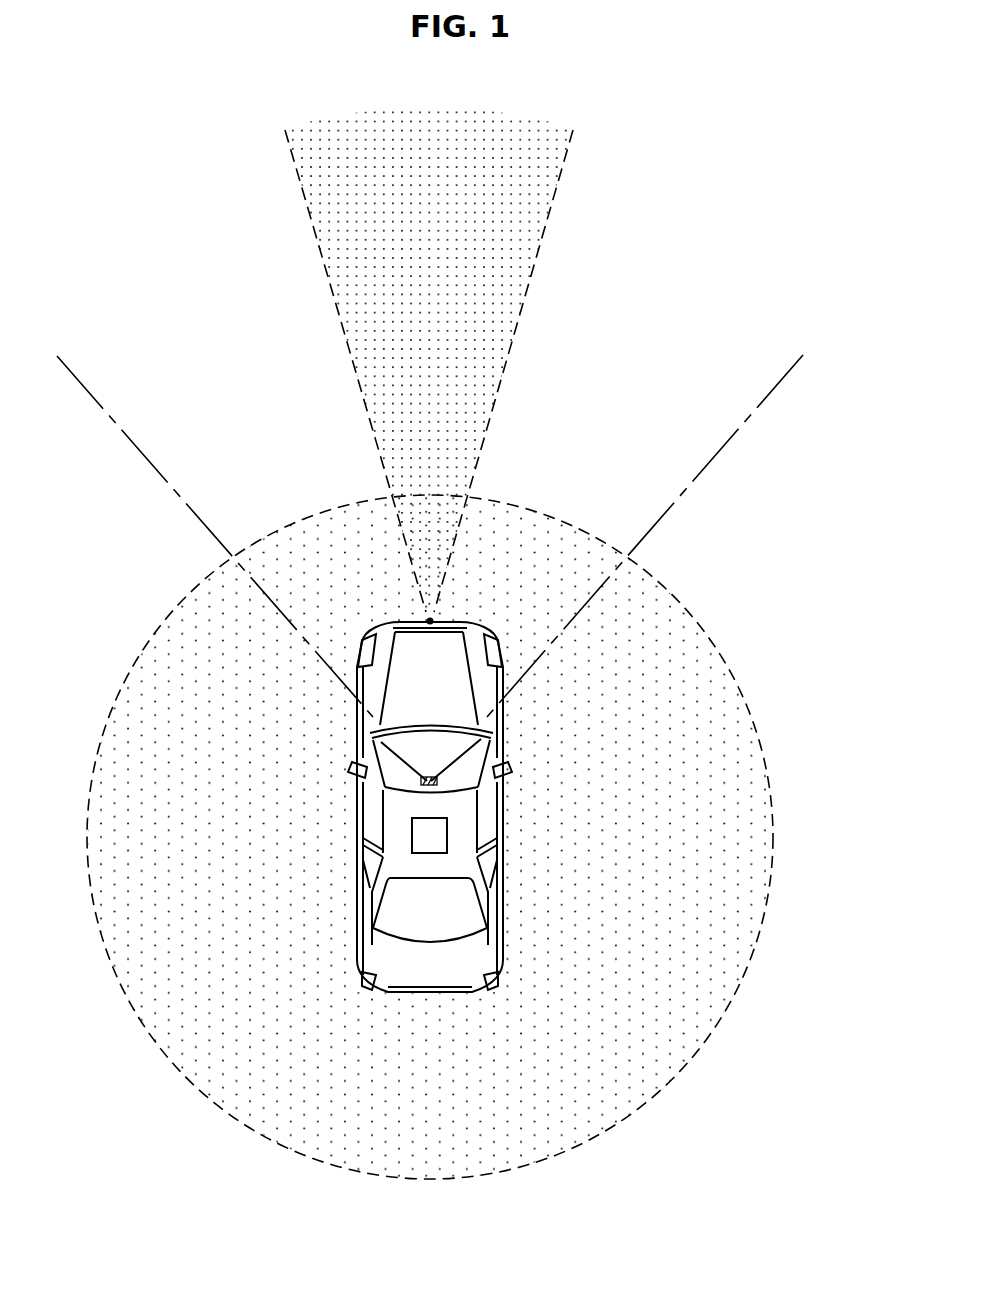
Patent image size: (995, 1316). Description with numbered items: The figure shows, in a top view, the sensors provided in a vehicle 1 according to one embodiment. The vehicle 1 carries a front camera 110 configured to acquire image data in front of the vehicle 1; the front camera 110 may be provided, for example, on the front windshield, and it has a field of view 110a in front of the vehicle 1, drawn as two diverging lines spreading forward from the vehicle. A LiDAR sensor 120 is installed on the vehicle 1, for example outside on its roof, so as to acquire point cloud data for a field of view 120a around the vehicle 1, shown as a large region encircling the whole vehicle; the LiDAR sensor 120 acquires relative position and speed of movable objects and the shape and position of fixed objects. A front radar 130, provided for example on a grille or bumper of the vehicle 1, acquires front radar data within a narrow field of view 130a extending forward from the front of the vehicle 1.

The vehicle 1 is at (504, 802).
The front camera 110 is at (417, 781).
The field of view 110a is at (755, 410).
The LiDAR sensor 120 is at (410, 848).
The field of view 120a is at (750, 822).
The front radar 130 is at (431, 620).
The field of view 130a is at (517, 243).